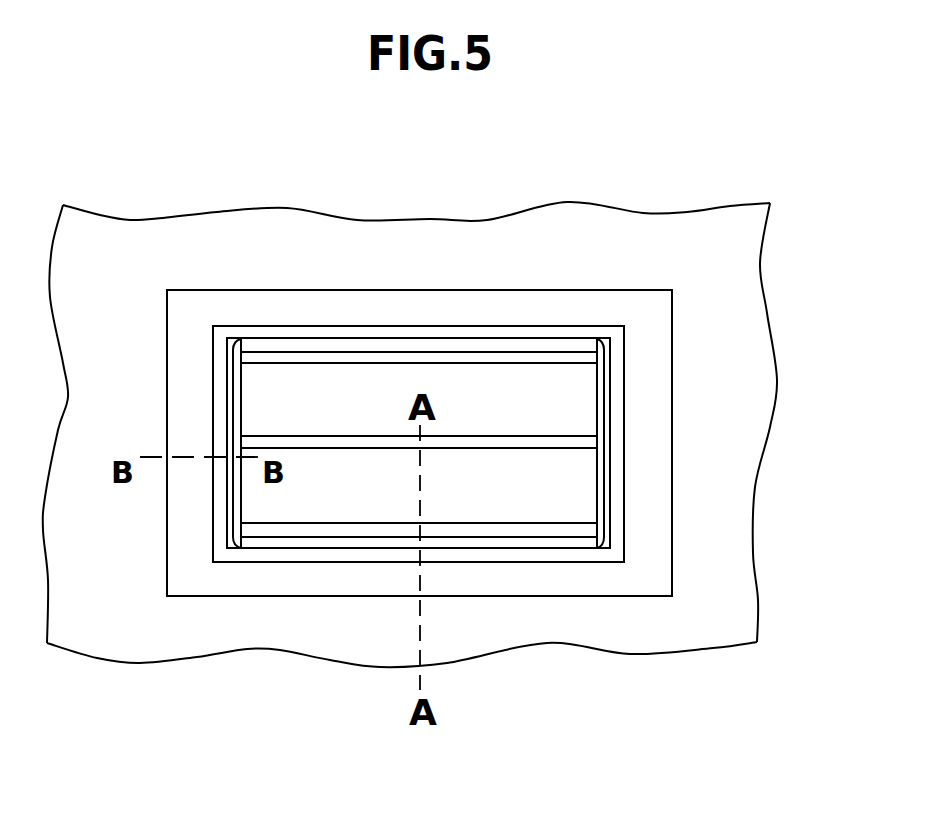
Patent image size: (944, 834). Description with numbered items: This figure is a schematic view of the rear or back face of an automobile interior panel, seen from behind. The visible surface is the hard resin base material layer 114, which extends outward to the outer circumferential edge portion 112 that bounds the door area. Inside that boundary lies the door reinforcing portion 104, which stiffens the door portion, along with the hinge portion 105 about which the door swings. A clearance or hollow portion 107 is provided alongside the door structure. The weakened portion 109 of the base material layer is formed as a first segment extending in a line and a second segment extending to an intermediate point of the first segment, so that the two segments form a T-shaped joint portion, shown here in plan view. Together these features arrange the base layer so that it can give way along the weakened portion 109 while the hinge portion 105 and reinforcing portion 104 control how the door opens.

The hard resin base material layer 114 is at (213, 238).
The outer circumferential edge portion 112 is at (643, 442).
The clearance or hollow portion 107 is at (610, 482).
The hinge portion 105 is at (536, 338).
The weakened portion of a base material layer 109 is at (612, 528).
The door reinforcing portion 104 is at (350, 393).